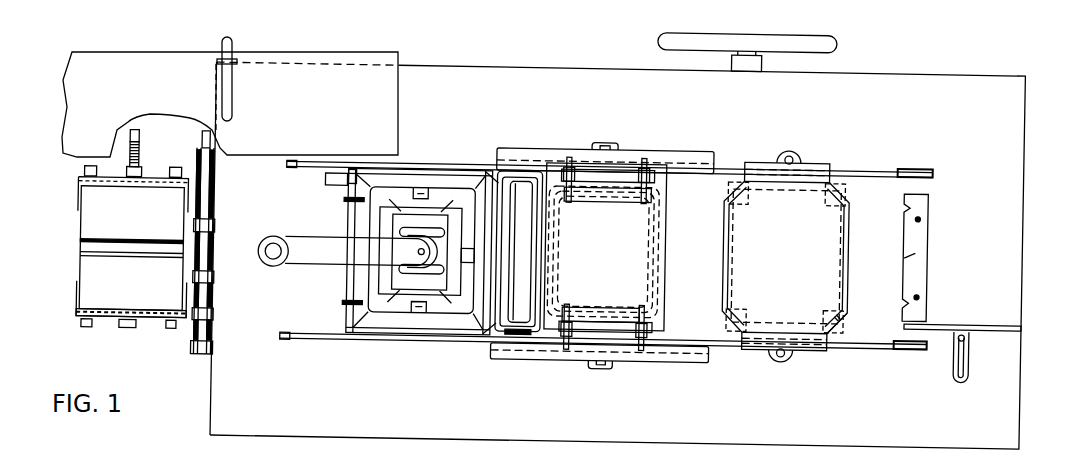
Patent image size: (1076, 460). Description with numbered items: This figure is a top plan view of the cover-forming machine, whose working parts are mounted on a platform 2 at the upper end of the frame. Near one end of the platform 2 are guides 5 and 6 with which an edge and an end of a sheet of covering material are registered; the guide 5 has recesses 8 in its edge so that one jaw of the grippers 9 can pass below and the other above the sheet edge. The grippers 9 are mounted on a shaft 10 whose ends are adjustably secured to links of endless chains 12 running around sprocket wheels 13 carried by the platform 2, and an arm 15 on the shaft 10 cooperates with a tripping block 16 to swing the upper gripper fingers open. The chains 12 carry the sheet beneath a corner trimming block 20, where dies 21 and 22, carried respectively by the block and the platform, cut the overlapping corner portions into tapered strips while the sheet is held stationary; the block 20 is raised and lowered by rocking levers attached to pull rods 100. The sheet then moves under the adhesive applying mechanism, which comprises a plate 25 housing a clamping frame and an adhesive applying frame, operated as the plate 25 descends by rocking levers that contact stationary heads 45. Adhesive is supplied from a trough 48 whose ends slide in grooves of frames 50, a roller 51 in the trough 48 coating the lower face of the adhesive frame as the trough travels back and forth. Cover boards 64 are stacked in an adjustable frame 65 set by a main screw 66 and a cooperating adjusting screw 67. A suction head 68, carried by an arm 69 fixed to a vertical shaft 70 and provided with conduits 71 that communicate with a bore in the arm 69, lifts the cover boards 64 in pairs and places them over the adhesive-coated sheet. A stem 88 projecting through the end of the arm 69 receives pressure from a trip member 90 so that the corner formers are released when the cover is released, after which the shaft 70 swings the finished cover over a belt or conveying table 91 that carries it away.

The platform 2 is at (1005, 381).
The guide 5 is at (902, 274).
The guide 6 is at (974, 314).
The recesses 8 is at (905, 247).
The grippers 9 is at (345, 308).
The shaft 10 is at (344, 278).
The endless chains 12 is at (727, 338).
The sprocket wheels 13 is at (909, 338).
The arm 15 is at (348, 170).
The tripping block 16 is at (327, 181).
The corner trimming block 20 is at (786, 256).
The die 21 is at (842, 318).
The die 22 is at (840, 322).
The plate 25 is at (662, 208).
The stationary heads 45 is at (603, 362).
The trough 48 is at (529, 304).
The frames 50 is at (654, 152).
The roller 51 is at (509, 306).
The cover boards 64 is at (87, 269).
The frame 65 is at (157, 329).
The main screw 66 is at (211, 303).
The adjusting screw 67 is at (109, 328).
The suction head 68 is at (438, 279).
The arm 69 is at (310, 239).
The shaft 70 is at (267, 246).
The conduits 71 is at (423, 228).
The stem 88 is at (416, 251).
The trip member 90 is at (228, 77).
The belt or conveying table 91 is at (146, 62).
The pull rods 100 is at (790, 146).